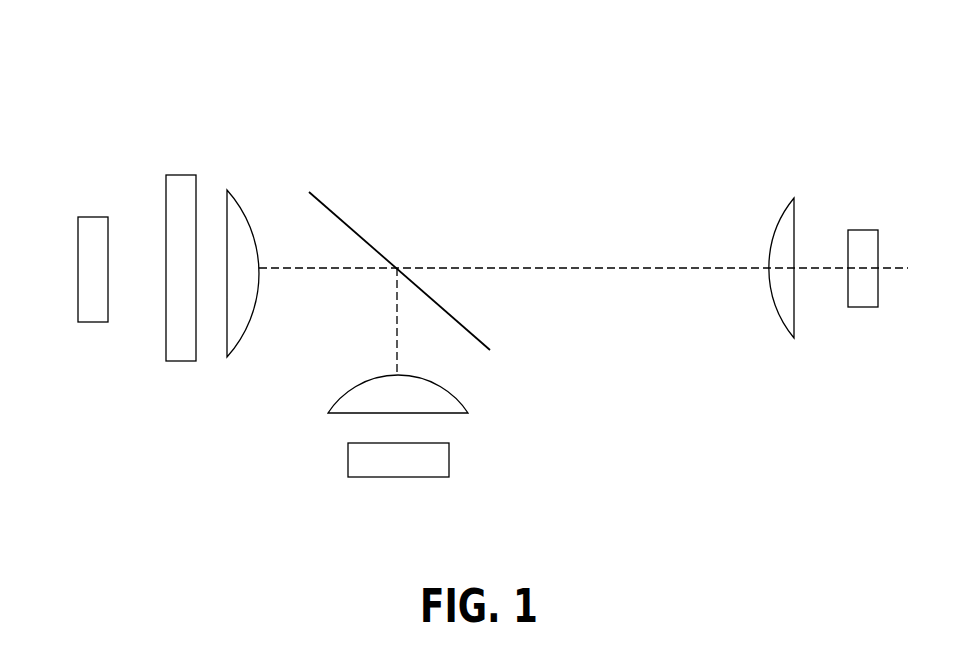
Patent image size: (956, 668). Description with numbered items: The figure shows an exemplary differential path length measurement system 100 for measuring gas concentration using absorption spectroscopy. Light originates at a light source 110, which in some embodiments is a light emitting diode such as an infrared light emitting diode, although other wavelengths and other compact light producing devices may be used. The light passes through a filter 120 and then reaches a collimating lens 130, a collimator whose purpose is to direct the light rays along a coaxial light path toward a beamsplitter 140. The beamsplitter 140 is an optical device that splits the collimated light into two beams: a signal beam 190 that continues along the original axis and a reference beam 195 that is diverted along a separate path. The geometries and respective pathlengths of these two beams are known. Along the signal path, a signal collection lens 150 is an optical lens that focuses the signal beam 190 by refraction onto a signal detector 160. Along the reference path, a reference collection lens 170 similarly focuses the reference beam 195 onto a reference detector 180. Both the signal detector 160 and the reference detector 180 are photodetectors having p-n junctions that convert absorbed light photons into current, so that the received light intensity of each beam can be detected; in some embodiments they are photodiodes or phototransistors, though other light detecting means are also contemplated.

The differential path length measurement system 100 is at (103, 55).
The light source 110 is at (93, 217).
The filter 120 is at (181, 175).
The collimating lens 130 is at (227, 192).
The beamsplitter 140 is at (401, 246).
The signal collection lens 150 is at (794, 200).
The signal detector 160 is at (862, 230).
The reference collection lens 170 is at (348, 395).
The reference detector 180 is at (449, 458).
The signal beam 190 is at (583, 265).
The reference beam 195 is at (397, 322).